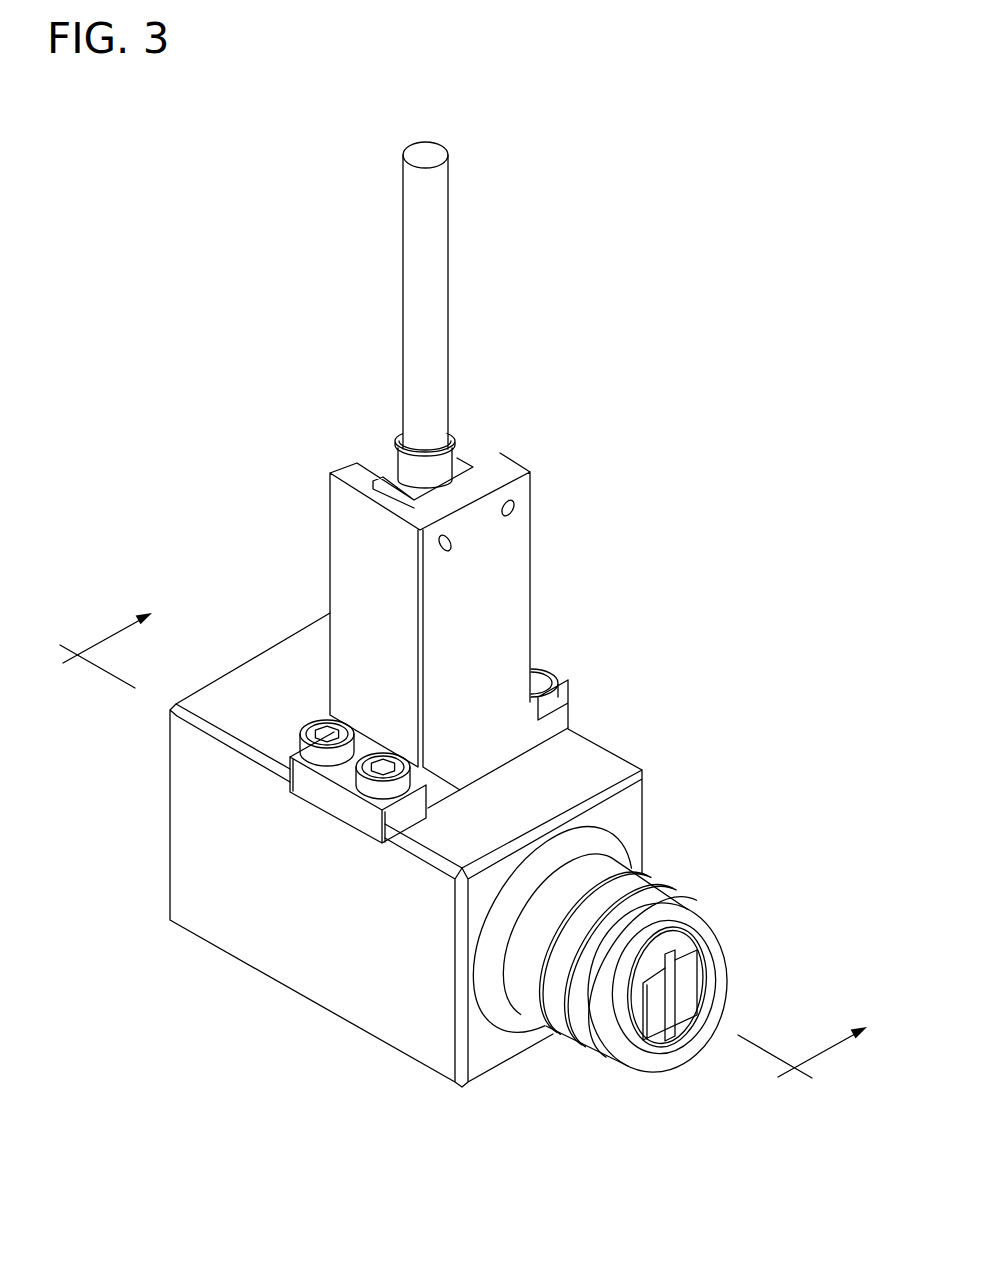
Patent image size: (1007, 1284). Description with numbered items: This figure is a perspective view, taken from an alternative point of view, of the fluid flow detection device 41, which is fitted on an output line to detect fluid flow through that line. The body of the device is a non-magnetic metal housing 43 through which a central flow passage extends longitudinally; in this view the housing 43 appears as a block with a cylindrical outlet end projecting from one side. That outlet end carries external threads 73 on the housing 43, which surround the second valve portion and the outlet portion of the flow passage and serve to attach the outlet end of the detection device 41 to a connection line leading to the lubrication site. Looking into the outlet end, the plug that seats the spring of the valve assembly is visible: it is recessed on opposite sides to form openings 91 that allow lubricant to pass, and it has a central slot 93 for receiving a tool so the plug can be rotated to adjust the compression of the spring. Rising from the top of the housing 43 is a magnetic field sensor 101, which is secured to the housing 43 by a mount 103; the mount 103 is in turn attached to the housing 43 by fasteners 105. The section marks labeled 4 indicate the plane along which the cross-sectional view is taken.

The fluid flow detection device 41 is at (680, 297).
The housing 43 is at (166, 932).
The external threads 73 is at (580, 1037).
The openings 91 is at (698, 978).
The central slot 93 is at (670, 1020).
The magnetic field sensor 101 is at (420, 347).
The mount 103 is at (490, 573).
The fasteners 105 is at (552, 699).
The section line 4- 4 is at (450, 864).